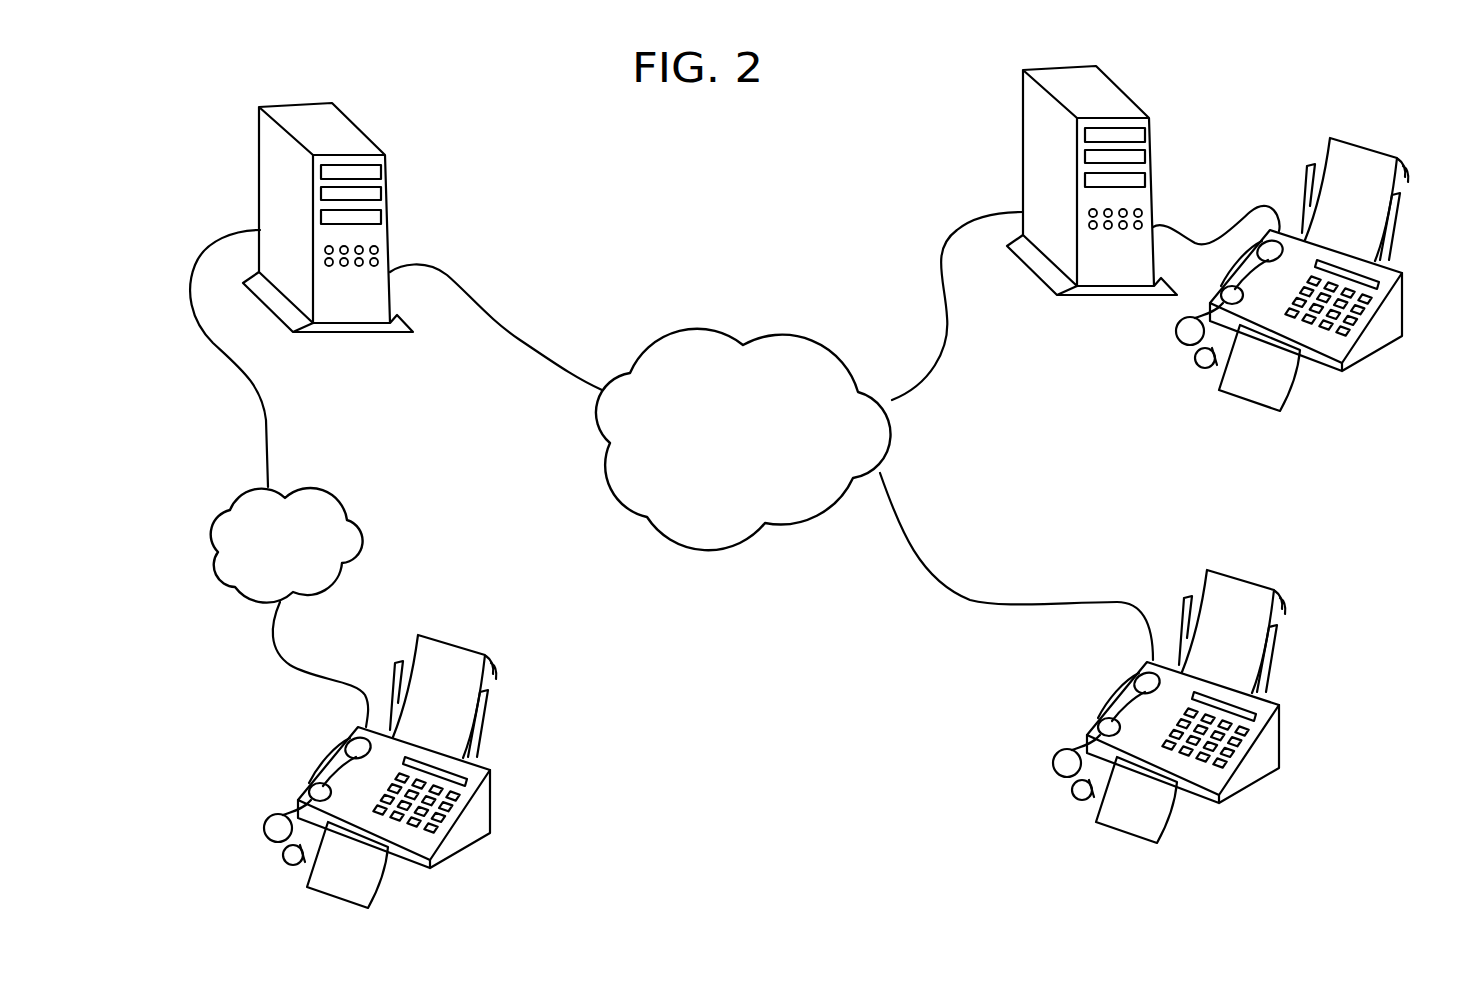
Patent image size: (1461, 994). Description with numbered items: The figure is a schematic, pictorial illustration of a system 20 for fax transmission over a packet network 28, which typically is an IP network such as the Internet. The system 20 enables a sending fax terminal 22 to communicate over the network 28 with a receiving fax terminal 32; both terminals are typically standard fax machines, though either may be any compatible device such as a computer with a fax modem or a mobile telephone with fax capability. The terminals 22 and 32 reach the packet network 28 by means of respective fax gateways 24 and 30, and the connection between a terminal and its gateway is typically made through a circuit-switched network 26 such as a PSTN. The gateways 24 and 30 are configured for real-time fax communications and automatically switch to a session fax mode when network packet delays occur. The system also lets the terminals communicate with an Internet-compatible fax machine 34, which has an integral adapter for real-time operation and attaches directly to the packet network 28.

The system 20 is at (135, 120).
The sending fax terminal 22 is at (495, 810).
The fax gateway 24 is at (387, 190).
The circuit-switched network 26 is at (327, 487).
The packet network 28 is at (797, 330).
The fax gateway 30 is at (1153, 155).
The receiving fax terminal 32 is at (1408, 288).
The Internet-compatible fax machine 34 is at (1285, 742).